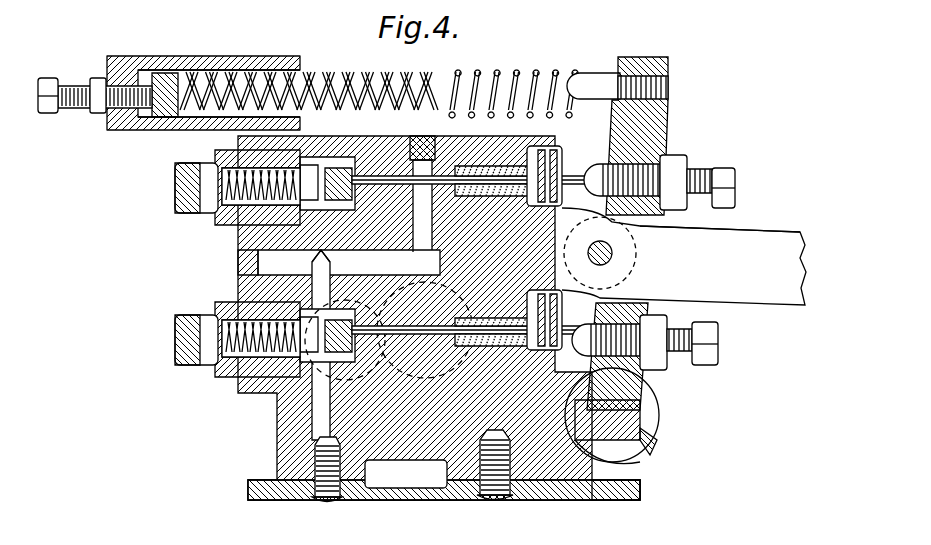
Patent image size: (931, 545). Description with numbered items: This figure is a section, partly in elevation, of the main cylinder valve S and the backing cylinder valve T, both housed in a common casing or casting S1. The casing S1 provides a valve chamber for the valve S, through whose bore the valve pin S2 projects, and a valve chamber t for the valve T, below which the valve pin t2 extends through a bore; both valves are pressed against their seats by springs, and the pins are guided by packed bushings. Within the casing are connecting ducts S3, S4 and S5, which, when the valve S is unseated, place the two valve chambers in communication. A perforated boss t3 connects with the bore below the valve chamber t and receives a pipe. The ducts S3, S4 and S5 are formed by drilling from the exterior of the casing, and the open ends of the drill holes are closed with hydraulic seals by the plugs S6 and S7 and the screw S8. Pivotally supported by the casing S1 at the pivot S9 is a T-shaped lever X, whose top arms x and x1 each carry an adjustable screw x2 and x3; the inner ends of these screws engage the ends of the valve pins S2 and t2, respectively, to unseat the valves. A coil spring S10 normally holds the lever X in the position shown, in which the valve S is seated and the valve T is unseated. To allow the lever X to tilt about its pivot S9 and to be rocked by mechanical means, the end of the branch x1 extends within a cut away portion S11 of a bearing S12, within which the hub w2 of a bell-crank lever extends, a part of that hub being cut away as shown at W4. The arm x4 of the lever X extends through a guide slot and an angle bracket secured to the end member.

The main cylinder valve S is at (338, 165).
The casing S1 is at (388, 165).
The valve pin S2 is at (506, 170).
The connecting duct S3 is at (422, 206).
The connecting duct S4 is at (349, 262).
The connecting duct S5 is at (316, 278).
The plug S6 is at (424, 139).
The plug S7 is at (240, 263).
The screw S8 is at (328, 499).
The pivot S9 is at (612, 253).
The coil spring S10 is at (443, 74).
The cut away portion S11 is at (640, 428).
The bearing S12 is at (642, 446).
The backing cylinder valve T is at (277, 398).
The valve chamber t is at (312, 402).
The valve pin t2 is at (448, 372).
The perforated boss t3 is at (396, 450).
The T-shaped lever X is at (684, 256).
The top arm x is at (656, 150).
The top arm x1 is at (630, 362).
The adjustable screw x2 is at (697, 178).
The adjustable screw x3 is at (692, 356).
The arm x4 is at (720, 260).
The hub w2 is at (618, 435).
The cut away part W4 is at (598, 500).